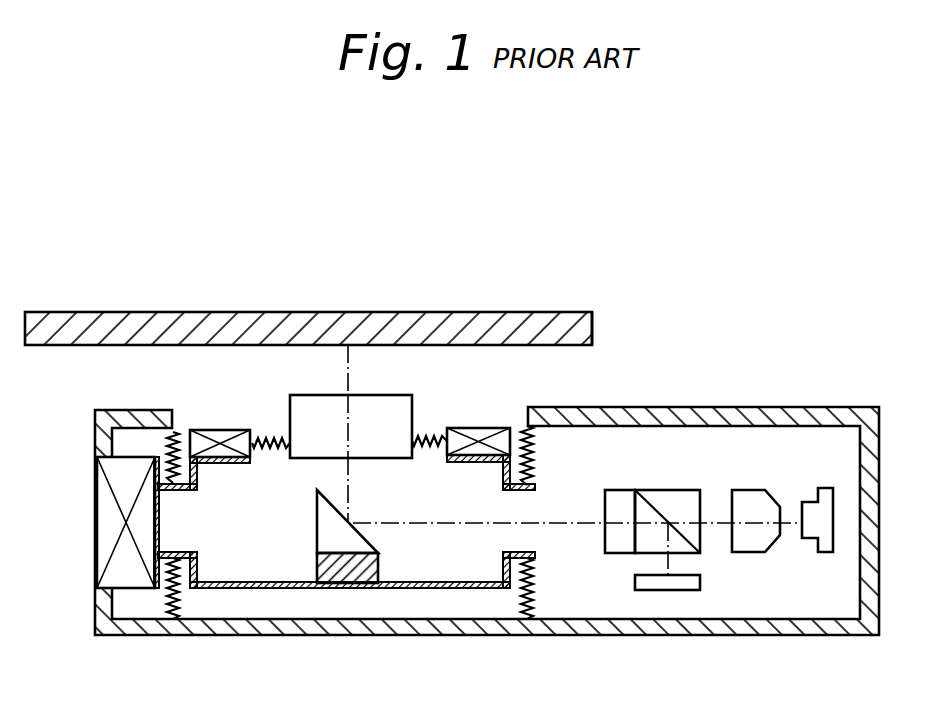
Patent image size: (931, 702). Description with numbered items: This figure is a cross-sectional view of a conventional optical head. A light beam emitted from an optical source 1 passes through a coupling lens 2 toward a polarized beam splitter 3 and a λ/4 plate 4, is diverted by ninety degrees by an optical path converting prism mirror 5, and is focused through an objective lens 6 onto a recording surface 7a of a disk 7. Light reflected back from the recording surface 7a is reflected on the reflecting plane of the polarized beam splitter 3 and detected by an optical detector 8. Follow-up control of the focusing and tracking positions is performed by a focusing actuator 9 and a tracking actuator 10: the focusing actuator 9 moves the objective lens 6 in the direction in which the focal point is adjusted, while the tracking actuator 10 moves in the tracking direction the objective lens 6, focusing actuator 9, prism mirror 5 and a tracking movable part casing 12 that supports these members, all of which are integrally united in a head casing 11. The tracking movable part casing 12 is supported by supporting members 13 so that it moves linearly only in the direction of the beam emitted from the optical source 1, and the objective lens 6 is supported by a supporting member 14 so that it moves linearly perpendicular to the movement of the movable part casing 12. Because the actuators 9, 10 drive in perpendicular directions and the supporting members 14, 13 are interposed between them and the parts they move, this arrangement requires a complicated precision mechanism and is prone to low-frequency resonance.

The optical source 1 is at (822, 497).
The coupling lens 2 is at (752, 496).
The polarized beam splitter 3 is at (672, 497).
The λ/4 plate 4 is at (614, 497).
The optical path converting prism mirror 5 is at (340, 588).
The objective lens 6 is at (391, 396).
The disk 7 is at (456, 312).
The recording surface 7a is at (592, 346).
The optical detector 8 is at (682, 592).
The focusing actuator 9 is at (230, 430).
The tracking actuator 10 is at (103, 516).
The head casing 11 is at (822, 636).
The tracking movable part casing 12 is at (436, 590).
The supporting members 13 is at (181, 431).
The supporting member 14 is at (274, 449).